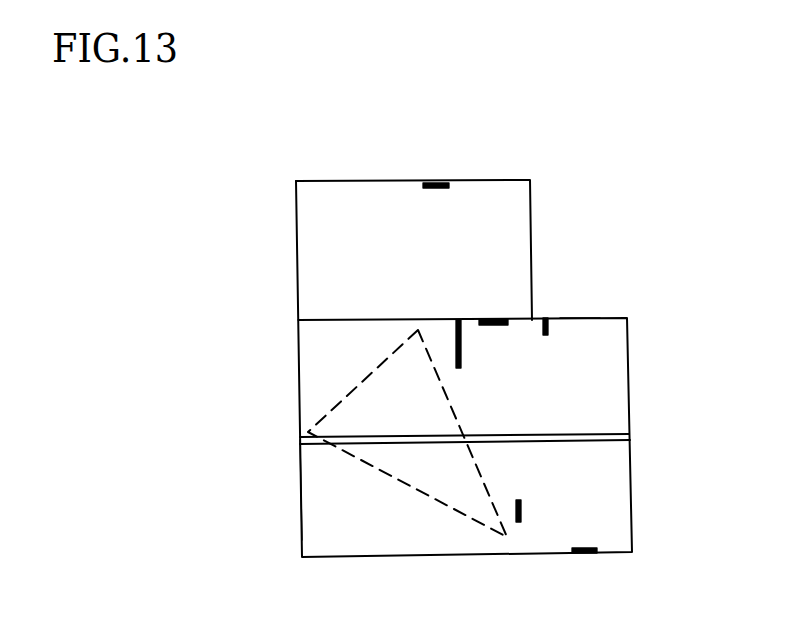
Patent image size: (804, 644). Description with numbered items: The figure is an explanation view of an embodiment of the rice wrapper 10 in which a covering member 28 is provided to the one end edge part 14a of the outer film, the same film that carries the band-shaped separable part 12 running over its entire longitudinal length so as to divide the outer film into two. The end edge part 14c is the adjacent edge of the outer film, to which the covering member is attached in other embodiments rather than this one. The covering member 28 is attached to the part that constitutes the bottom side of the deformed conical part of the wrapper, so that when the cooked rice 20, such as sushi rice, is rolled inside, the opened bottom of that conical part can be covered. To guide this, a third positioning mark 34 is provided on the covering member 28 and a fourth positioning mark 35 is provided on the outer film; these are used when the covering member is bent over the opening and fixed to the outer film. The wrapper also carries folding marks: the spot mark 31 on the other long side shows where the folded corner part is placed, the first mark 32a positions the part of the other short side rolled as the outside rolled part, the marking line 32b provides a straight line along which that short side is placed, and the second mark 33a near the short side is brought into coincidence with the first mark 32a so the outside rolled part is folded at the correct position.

The rice wrapper 10 is at (612, 390).
The separable part 12 is at (600, 443).
The end edge part 14a is at (578, 315).
The end edge part 14c is at (300, 487).
The cooked rice 20 is at (410, 487).
The covering member 28 is at (393, 198).
The spot mark 31 is at (550, 317).
The first mark 32a is at (528, 513).
The marking line 32b is at (455, 343).
The second mark 33a is at (580, 553).
The third positioning mark 34 is at (438, 180).
The fourth positioning mark 35 is at (498, 327).